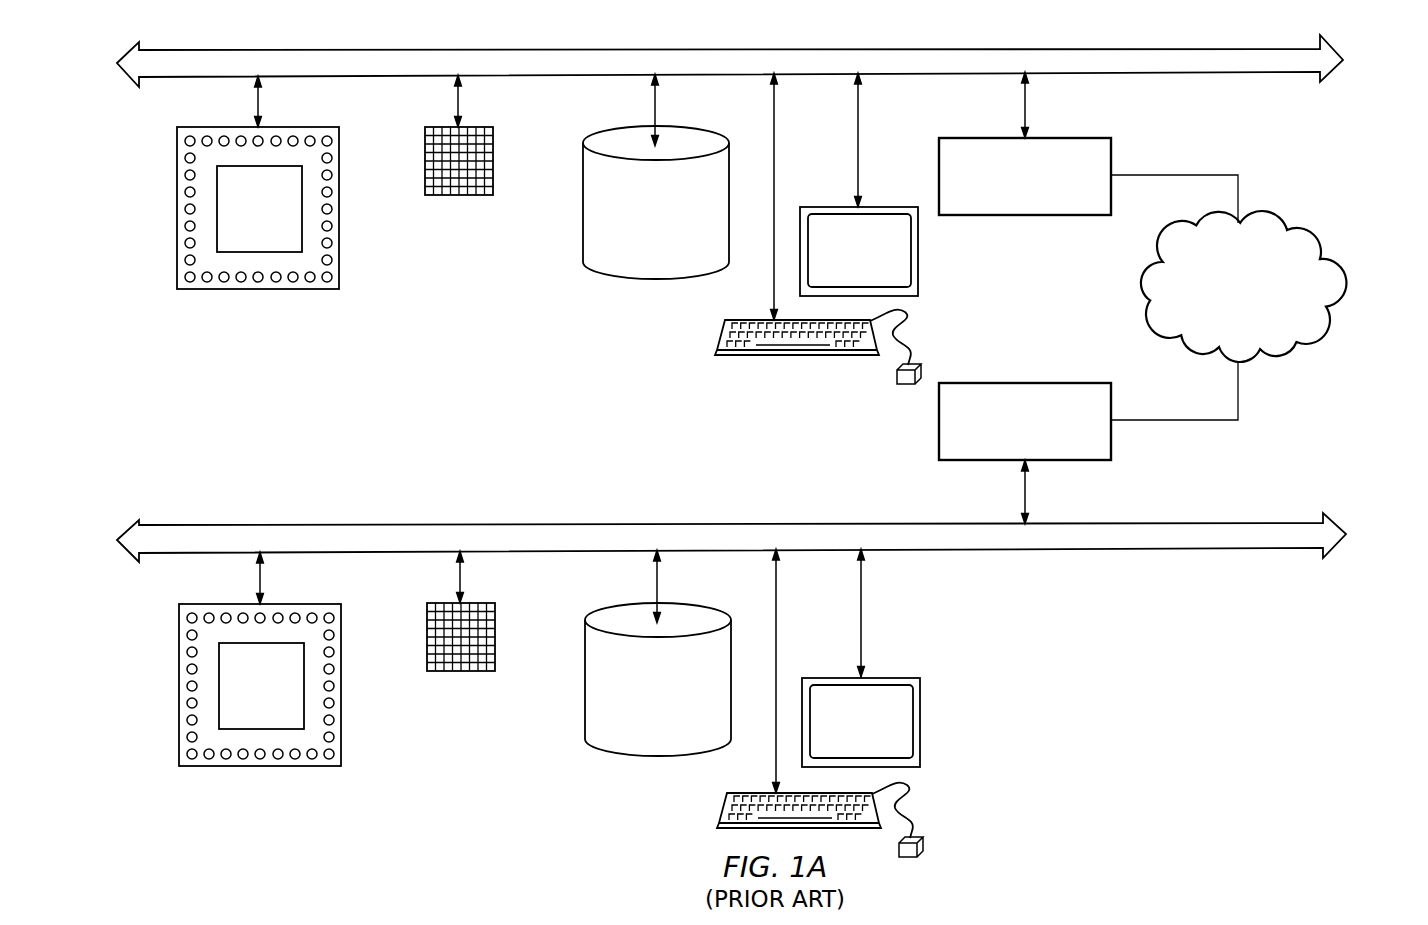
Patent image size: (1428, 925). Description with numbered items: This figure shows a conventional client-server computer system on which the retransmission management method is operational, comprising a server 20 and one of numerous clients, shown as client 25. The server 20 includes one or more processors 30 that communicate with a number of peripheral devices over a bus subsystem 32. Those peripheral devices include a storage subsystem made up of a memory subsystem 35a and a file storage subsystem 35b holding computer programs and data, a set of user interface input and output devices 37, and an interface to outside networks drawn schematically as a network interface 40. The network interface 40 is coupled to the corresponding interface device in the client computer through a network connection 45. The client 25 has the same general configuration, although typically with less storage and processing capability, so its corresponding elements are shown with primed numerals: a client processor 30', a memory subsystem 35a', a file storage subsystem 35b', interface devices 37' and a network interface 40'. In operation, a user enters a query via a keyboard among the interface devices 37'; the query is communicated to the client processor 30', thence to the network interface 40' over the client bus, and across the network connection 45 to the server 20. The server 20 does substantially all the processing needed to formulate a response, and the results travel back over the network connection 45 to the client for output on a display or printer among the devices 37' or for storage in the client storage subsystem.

The server 20 is at (1180, 49).
The client 25 is at (1200, 524).
The processor 30 is at (226, 182).
The client processor 30' is at (227, 659).
The bus subsystem 32 is at (1047, 49).
The memory subsystem 35a is at (422, 135).
The memory subsystem 35a' is at (423, 611).
The file storage subsystem 35b is at (619, 176).
The file storage subsystem 35b' is at (620, 653).
The user interface input and output devices 37 is at (821, 228).
The interface devices 37' is at (824, 703).
The network interface 40 is at (1088, 147).
The network interface 40' is at (1088, 443).
The network connection 45 is at (1345, 284).